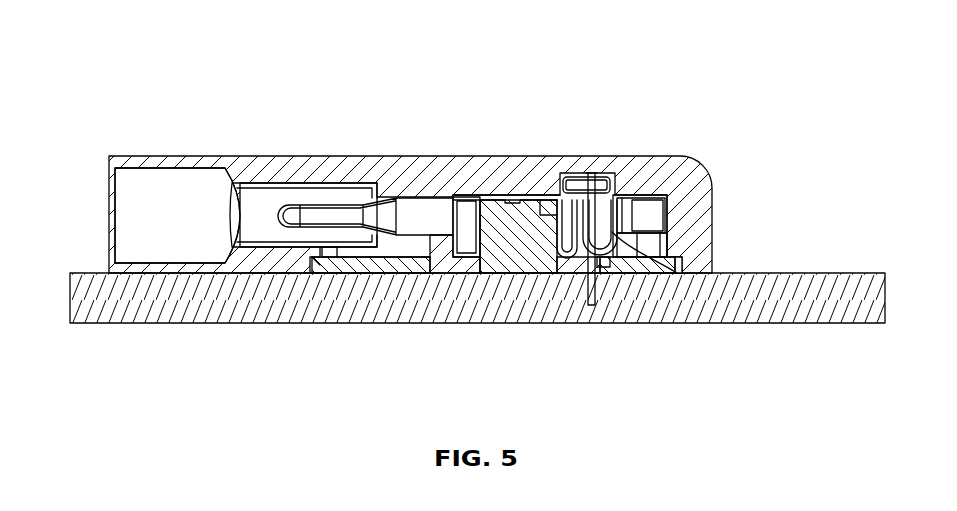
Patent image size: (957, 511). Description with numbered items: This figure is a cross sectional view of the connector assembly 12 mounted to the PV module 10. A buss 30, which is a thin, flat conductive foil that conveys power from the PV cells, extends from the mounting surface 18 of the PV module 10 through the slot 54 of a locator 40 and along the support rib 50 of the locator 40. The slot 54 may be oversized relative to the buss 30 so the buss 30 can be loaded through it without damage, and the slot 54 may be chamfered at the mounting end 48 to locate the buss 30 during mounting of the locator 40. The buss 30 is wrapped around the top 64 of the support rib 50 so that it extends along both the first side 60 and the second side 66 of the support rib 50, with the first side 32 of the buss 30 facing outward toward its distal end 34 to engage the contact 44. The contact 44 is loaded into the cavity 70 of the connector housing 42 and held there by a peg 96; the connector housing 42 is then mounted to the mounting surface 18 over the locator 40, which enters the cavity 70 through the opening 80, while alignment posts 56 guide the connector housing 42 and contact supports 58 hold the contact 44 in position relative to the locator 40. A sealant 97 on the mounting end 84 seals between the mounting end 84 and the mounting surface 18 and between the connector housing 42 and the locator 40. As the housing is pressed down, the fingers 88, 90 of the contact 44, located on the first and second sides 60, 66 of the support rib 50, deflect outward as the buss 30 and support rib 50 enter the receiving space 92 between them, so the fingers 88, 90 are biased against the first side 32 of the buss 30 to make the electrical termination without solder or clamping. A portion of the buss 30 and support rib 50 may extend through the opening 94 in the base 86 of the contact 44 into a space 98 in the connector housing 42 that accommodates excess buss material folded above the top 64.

The PV module 10 is at (477, 228).
The connector assembly 12 is at (226, 75).
The mounting surface 18 is at (796, 272).
The buss 30 is at (605, 284).
The first side 32 is at (625, 265).
The distal end 34 is at (584, 290).
The locator 40 is at (364, 268).
The connector housing 42 is at (394, 172).
The contact 44 is at (450, 197).
The mounting end 48 is at (482, 272).
The support rib 50 is at (640, 197).
The slot 54 is at (626, 258).
The alignment posts 56 is at (668, 236).
The contact supports 58 is at (444, 246).
The first side 60 is at (615, 197).
The top 64 is at (592, 168).
The second side 66 is at (560, 203).
The cavity 70 is at (388, 250).
The opening 80 is at (295, 266).
The mounting end 84 is at (276, 280).
The base 86 is at (547, 196).
The finger 88 is at (663, 212).
The finger 90 is at (538, 218).
The receiving space 92 is at (574, 256).
The opening 94 is at (604, 183).
The peg 96 is at (514, 196).
The sealant 97 is at (312, 268).
The space 98 is at (588, 176).